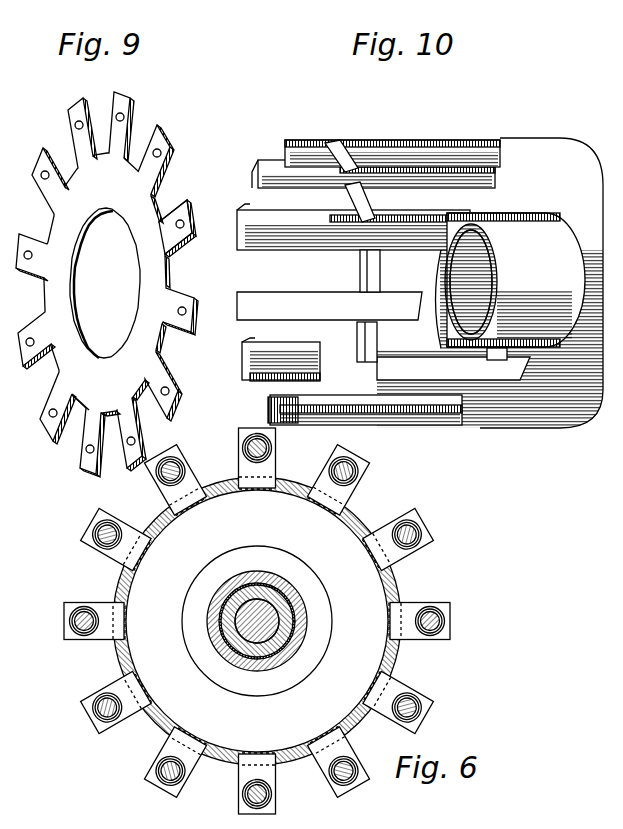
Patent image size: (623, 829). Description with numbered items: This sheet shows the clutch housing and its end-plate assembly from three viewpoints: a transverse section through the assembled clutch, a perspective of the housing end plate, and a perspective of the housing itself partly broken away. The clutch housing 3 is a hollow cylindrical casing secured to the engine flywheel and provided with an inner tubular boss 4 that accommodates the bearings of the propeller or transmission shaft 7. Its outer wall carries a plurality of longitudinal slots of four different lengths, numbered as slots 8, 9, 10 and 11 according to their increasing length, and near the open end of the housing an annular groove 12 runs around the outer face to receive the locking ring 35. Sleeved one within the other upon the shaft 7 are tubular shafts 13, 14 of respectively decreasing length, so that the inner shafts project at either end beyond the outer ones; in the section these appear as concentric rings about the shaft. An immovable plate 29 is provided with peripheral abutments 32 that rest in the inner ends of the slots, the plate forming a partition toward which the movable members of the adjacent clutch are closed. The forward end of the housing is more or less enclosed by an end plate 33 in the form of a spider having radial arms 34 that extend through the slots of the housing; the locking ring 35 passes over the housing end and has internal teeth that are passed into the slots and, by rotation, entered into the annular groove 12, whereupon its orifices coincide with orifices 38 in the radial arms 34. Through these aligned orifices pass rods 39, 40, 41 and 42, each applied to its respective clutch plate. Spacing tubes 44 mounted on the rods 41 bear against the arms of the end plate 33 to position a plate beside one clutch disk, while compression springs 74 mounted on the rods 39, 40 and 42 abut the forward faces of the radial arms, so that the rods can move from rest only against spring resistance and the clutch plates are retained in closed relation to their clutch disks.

In FIG. 10, the clutch housing 3 is at (543, 172).
In FIG. 6, the clutch housing 3 is at (114, 646).
In FIG. 10, the inner tubular boss 4 is at (515, 280).
In FIG. 6, the propeller or transmission shaft 7 is at (268, 622).
In FIG. 10, the longitudinal slot 8 is at (285, 152).
In FIG. 10, the longitudinal slot 9 is at (298, 432).
In FIG. 10, the longitudinal slot 10 is at (478, 172).
In FIG. 10, the longitudinal slot 11 is at (480, 143).
In FIG. 10, the annular groove 12 is at (372, 195).
In FIG. 6, the tubular shaft 13 is at (290, 600).
In FIG. 6, the tubular shaft 14 is at (280, 590).
In FIG. 6, the immovable plate 29 is at (257, 637).
In FIG. 6, the peripheral abutment 32 is at (128, 562).
In FIG. 9, the end plate 33 is at (143, 267).
In FIG. 9, the radial arm 34 is at (145, 175).
In FIG. 9, the locking ring 35 is at (99, 284).
In FIG. 9, the orifice 38 is at (134, 106).
In FIG. 6, the rod 39 is at (95, 537).
In FIG. 6, the rod 40 is at (363, 476).
In FIG. 6, the rod 41 is at (243, 447).
In FIG. 6, the rod 42 is at (165, 480).
In FIG. 6, the spacing tube 44 is at (108, 702).
In FIG. 6, the compression spring 74 is at (452, 622).